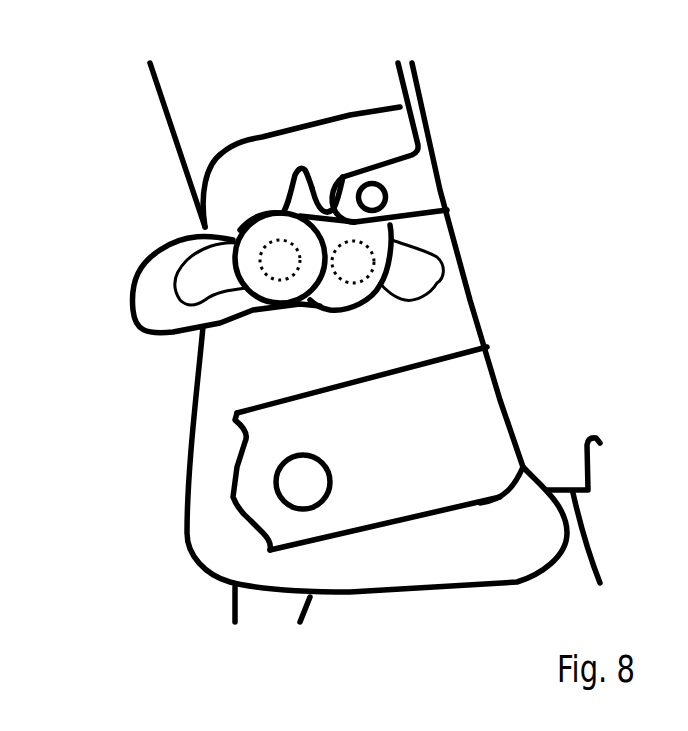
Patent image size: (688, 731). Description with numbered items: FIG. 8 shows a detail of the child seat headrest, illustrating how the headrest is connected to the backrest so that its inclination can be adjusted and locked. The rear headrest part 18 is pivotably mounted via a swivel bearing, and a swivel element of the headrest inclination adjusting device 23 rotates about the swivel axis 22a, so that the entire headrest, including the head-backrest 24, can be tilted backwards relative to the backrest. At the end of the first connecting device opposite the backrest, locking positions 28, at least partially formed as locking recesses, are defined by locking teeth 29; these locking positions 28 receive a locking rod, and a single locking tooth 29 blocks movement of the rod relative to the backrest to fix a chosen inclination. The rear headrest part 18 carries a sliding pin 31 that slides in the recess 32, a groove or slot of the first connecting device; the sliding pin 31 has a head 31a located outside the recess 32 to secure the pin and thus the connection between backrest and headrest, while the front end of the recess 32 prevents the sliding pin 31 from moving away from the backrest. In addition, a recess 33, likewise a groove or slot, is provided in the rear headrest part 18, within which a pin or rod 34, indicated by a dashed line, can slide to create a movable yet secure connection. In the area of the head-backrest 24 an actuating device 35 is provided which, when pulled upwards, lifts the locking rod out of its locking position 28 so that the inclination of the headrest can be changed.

The rear headrest part 18 is at (418, 340).
The swivel axis 22a is at (295, 480).
The headrest inclination adjusting device 23 is at (362, 562).
The head-backrest 24 is at (433, 155).
The locking positions 28 is at (324, 187).
The locking teeth 29 is at (290, 175).
The sliding pin 31 is at (280, 260).
The head 31a is at (260, 232).
The recess 32 is at (213, 278).
The recess 33 is at (423, 282).
The pin or rod 34 is at (360, 258).
The actuating device 35 is at (412, 82).